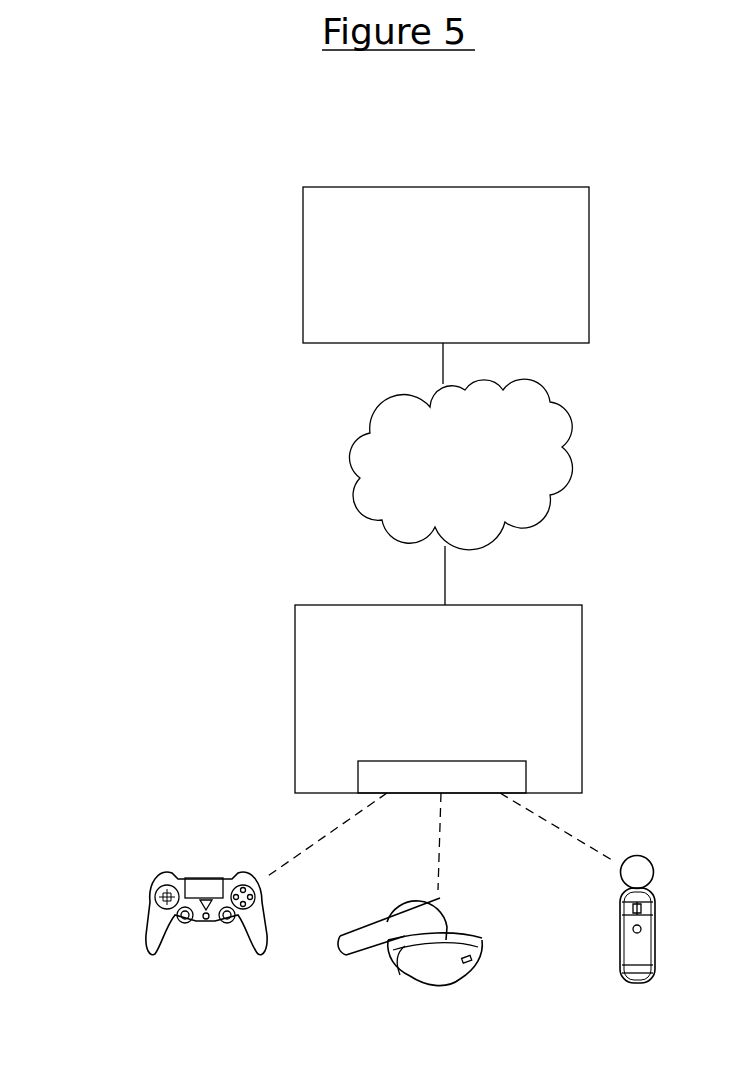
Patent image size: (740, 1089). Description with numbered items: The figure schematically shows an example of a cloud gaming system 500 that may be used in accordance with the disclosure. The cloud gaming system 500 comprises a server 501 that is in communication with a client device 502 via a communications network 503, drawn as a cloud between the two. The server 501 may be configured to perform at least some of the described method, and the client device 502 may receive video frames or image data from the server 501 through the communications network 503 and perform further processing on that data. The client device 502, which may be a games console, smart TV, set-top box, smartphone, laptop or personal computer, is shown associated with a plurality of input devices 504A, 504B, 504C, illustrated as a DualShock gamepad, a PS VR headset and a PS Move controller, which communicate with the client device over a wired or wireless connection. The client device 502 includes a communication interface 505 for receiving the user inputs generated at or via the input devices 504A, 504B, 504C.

The cloud gaming system 500 is at (148, 148).
The server 501 is at (303, 253).
The client device 502 is at (295, 650).
The communications network 503 is at (360, 473).
The input device 504A is at (145, 917).
The input device 504B is at (400, 977).
The input device 504C is at (620, 970).
The communication interface 505 is at (442, 715).